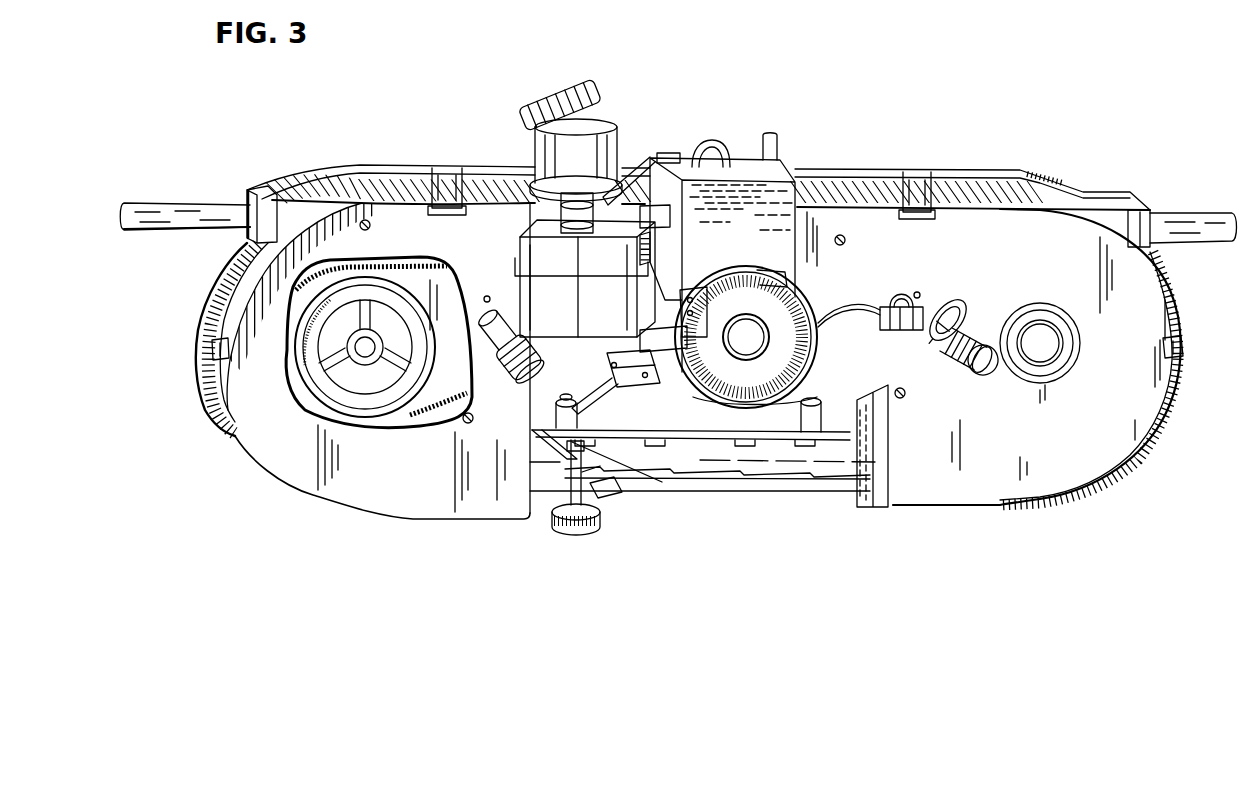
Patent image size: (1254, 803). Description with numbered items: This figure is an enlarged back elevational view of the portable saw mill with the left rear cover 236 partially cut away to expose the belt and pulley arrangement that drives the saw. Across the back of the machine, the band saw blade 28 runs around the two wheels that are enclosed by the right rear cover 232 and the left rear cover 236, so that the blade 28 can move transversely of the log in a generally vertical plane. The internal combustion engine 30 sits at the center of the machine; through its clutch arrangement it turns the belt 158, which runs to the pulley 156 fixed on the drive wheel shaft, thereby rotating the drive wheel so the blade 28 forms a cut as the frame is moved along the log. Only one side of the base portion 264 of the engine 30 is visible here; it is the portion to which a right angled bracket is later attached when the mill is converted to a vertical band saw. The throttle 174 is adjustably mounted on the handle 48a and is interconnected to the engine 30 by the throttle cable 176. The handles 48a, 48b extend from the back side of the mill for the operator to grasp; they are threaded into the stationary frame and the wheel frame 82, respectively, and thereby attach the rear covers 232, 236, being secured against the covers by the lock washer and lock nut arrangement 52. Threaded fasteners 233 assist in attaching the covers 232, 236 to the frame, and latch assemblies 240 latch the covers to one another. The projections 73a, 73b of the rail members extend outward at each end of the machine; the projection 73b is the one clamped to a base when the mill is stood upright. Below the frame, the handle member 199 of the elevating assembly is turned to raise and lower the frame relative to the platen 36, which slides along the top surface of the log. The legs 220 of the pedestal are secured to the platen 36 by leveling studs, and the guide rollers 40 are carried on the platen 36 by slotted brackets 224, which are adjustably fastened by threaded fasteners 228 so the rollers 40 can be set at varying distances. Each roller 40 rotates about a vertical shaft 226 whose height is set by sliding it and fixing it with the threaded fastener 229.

The band saw blade 28 is at (826, 478).
The internal combustion engine 30 is at (533, 103).
The platen 36 is at (650, 398).
The guide rollers 40 is at (562, 532).
The handle 48a is at (958, 362).
The handle 48b is at (527, 370).
The lock washer and lock nut arrangement 52 is at (487, 295).
The projection of the rail member 73a is at (1192, 212).
The projection of the rail member 73b is at (202, 207).
The wheel frame 82 is at (440, 278).
The pulley 156 is at (307, 378).
The belt 158 is at (433, 420).
The throttle 174 is at (943, 302).
The throttle cable 176 is at (867, 308).
The handle member 199 is at (817, 110).
The legs 220 is at (616, 338).
The brackets 224 is at (625, 462).
The vertical shaft 226 is at (598, 520).
The threaded fasteners 228 is at (632, 438).
The threaded fastener 229 is at (607, 493).
The right rear cover 232 is at (1010, 474).
The threaded fasteners 233 is at (363, 218).
The left rear cover 236 is at (383, 490).
The latch assemblies 240 is at (445, 170).
The base portion 264 is at (658, 392).